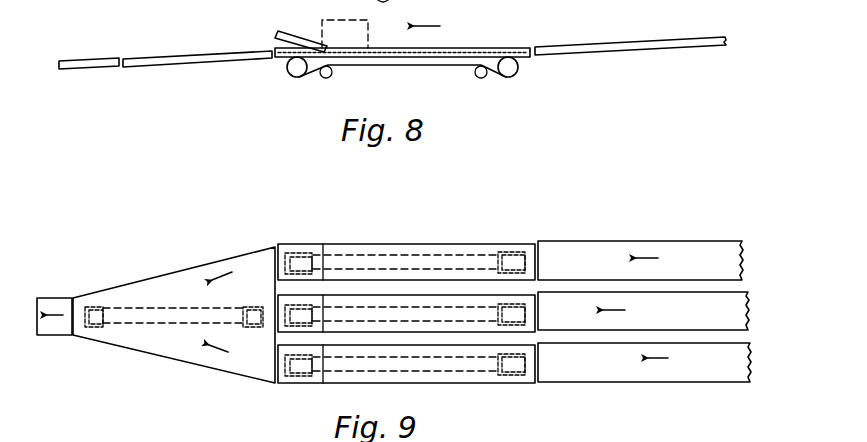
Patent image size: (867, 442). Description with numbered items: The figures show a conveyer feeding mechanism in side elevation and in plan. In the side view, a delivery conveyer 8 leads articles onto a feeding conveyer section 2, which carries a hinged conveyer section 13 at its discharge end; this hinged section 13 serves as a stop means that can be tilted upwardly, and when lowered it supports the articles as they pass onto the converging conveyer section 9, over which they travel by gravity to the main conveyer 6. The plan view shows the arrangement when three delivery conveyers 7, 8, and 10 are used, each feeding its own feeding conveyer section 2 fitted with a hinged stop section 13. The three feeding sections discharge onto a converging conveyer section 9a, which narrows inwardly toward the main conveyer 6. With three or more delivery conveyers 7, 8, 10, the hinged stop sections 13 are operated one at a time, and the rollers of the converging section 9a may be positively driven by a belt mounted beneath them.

In FIG. 8, the feeding conveyer section 2 is at (508, 48).
In FIG. 9, the feeding conveyer section 2 is at (472, 247).
In FIG. 8, the main conveyer 6 is at (91, 63).
In FIG. 9, the main conveyer 6 is at (52, 297).
In FIG. 9, the delivery conveyer 7 is at (743, 262).
In FIG. 8, the delivery conveyer 8 is at (640, 45).
In FIG. 9, the delivery conveyer 8 is at (738, 363).
In FIG. 8, the converging conveyer section 9 is at (175, 63).
In FIG. 9, the converging conveyer section 9a is at (172, 282).
In FIG. 9, the delivery conveyer 10 is at (744, 317).
In FIG. 8, the hinged conveyer section 13 is at (298, 46).
In FIG. 9, the hinged conveyer section 13 is at (293, 252).